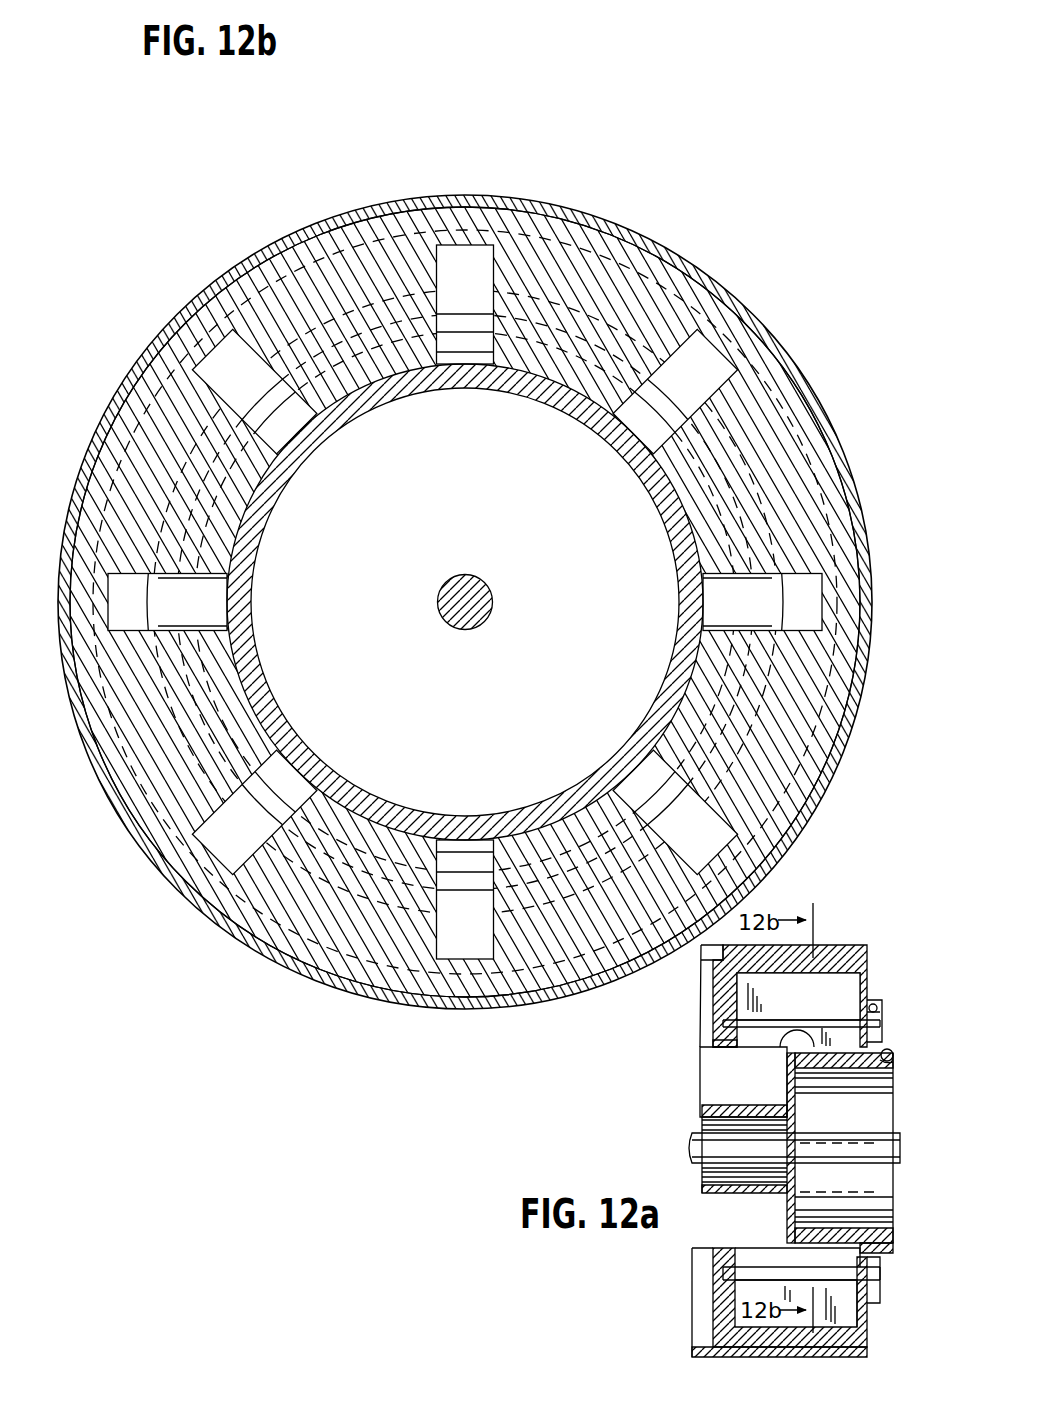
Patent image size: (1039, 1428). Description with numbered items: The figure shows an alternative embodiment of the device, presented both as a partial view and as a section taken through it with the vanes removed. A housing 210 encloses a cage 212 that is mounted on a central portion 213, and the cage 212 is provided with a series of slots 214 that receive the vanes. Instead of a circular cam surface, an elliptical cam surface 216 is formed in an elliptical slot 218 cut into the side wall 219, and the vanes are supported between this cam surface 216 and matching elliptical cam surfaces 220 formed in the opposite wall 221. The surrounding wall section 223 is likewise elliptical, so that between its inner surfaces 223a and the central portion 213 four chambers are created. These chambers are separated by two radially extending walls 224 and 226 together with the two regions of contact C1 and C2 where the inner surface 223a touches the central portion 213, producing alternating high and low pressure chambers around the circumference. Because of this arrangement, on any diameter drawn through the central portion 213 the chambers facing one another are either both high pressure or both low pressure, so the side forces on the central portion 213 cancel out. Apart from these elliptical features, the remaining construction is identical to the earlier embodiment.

In FIG. 12B, the housing 210 is at (543, 199).
In FIG. 12A, the housing 210 is at (822, 940).
In FIG. 12B, the cage 212 is at (301, 238).
In FIG. 12A, the cage 212 is at (843, 945).
In FIG. 12B, the central portion 213 is at (690, 490).
In FIG. 12A, the central portion 213 is at (781, 1048).
In FIG. 12B, the slots 214 is at (498, 274).
In FIG. 12A, the slots 214 is at (831, 1011).
In FIG. 12B, the elliptical cam surface 216 is at (131, 397).
In FIG. 12A, the elliptical cam surface 216 is at (880, 1007).
In FIG. 12A, the elliptical slot 218 is at (881, 1023).
In FIG. 12A, the side wall 219 is at (868, 959).
In FIG. 12A, the elliptical cam surfaces 220 is at (724, 1021).
In FIG. 12A, the wall 221 is at (713, 963).
In FIG. 12B, the wall section 223 is at (122, 465).
In FIG. 12A, the wall section 223 is at (893, 1050).
In FIG. 12B, the inner surfaces 223a is at (222, 469).
In FIG. 12A, the inner surfaces 223a is at (893, 1062).
In FIG. 12B, the radially extending wall 224 is at (226, 633).
In FIG. 12B, the radially extending wall 226 is at (702, 633).
In FIG. 12B, the region of contact C1 is at (463, 368).
In FIG. 12B, the region of contact C2 is at (463, 840).